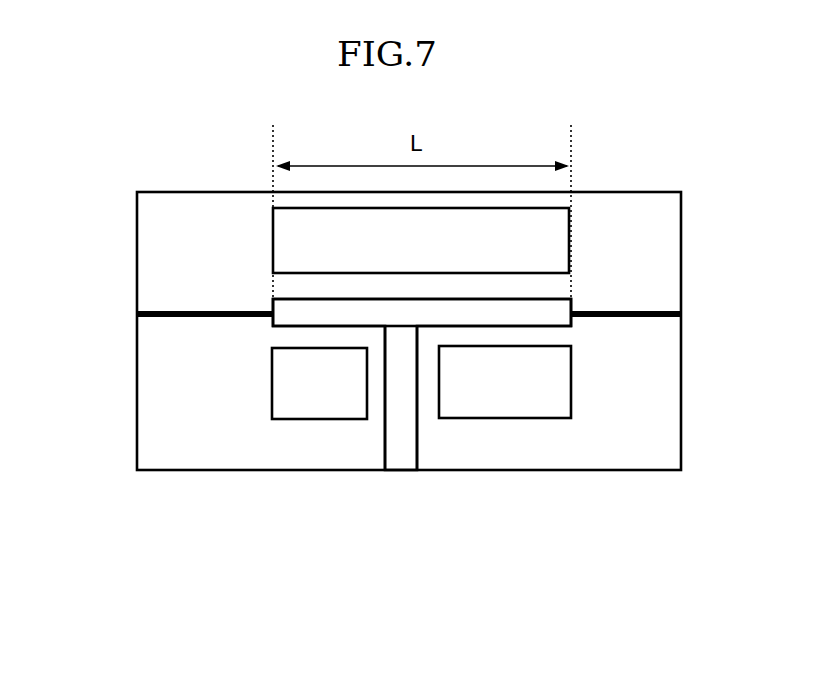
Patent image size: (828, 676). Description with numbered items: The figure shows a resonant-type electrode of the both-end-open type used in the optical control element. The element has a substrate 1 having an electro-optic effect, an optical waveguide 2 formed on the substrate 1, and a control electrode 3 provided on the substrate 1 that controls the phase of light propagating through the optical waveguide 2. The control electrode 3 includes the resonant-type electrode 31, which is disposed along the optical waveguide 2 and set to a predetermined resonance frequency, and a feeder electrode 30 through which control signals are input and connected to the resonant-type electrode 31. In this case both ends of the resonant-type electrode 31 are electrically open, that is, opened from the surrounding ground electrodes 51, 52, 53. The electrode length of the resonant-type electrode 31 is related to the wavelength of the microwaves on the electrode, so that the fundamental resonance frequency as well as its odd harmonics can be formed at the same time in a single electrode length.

The substrate 1 is at (183, 432).
The optical waveguide 2 is at (220, 315).
The control electrode 3 is at (372, 434).
The feeder electrode 30 is at (405, 470).
The resonant-type electrode 31 is at (543, 317).
The ground electrode 51 is at (302, 240).
The ground electrode 52 is at (297, 390).
The ground electrode 53 is at (505, 382).